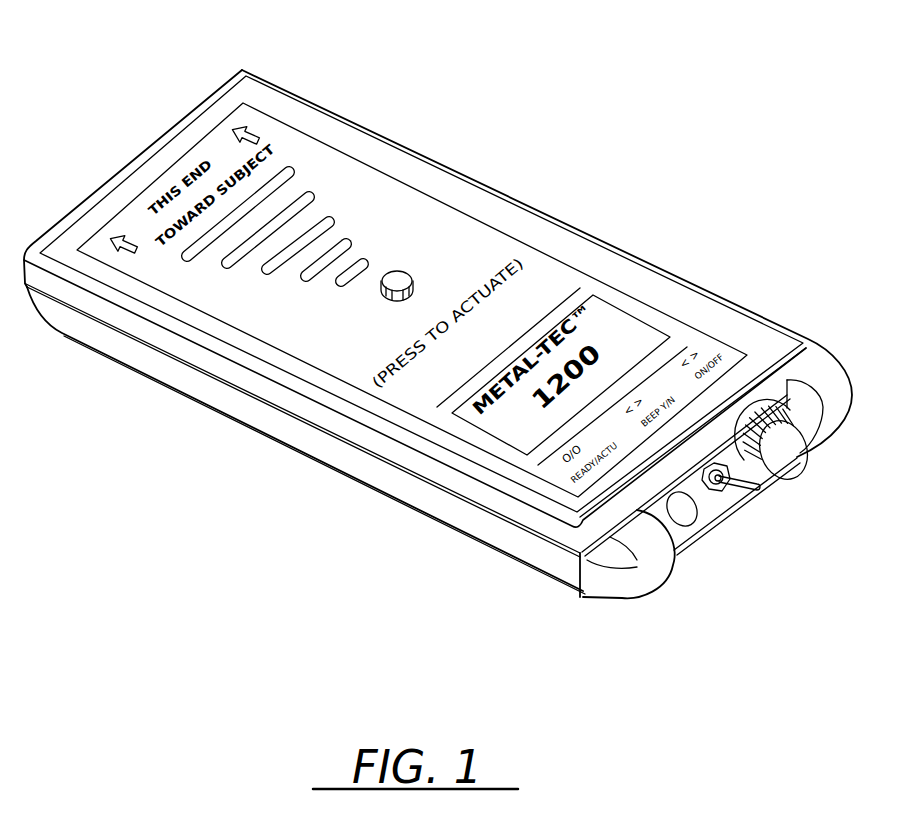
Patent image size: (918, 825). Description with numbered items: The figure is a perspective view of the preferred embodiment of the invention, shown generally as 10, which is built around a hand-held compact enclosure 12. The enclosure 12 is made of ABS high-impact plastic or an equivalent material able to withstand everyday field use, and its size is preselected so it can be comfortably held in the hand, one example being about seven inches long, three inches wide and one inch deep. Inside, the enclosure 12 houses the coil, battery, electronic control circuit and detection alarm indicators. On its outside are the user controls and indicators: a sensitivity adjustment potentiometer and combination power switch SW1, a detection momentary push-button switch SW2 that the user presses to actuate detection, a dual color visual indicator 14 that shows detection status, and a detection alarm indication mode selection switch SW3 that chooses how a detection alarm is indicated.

The preferred embodiment 10 is at (365, 92).
The hand-held compact enclosure 12 is at (566, 233).
The dual color visual indicator 14 is at (695, 542).
The sensitivity adjustment potentiometer and combination power switch SW1 is at (801, 469).
The detection momentary push-button switch SW2 is at (419, 262).
The detection alarm indication mode selection switch SW3 is at (744, 516).